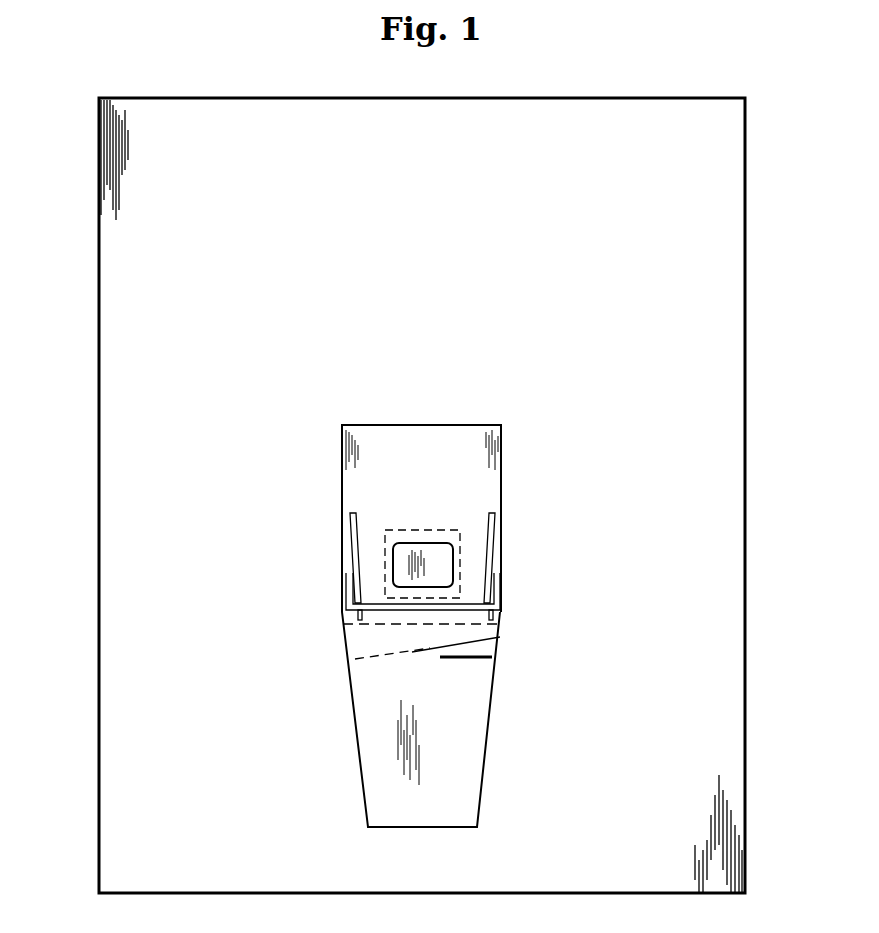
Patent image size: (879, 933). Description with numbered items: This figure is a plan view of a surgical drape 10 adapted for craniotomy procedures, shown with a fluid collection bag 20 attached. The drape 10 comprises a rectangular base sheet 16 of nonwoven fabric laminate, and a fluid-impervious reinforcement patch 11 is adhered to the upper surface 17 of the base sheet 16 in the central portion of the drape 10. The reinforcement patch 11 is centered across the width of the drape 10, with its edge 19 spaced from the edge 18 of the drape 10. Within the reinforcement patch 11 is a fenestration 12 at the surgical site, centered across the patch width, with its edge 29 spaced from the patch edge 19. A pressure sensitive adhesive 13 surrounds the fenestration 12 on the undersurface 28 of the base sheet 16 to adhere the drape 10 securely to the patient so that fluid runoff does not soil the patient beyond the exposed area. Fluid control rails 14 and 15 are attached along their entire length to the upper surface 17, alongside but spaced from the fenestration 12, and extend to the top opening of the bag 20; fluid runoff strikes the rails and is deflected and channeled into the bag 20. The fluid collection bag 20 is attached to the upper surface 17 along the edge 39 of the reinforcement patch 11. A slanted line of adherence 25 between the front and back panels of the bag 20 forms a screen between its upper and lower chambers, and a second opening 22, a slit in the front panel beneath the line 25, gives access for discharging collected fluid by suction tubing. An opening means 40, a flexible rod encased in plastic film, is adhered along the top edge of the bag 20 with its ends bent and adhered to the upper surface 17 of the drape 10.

The surgical drape 10 is at (691, 86).
The reinforcement patch 11 is at (488, 473).
The fenestration 12 is at (440, 557).
The pressure sensitive adhesive 13 is at (387, 530).
The fluid control rail 14 is at (352, 537).
The fluid control rail 15 is at (494, 538).
The base sheet 16 is at (713, 737).
The upper surface 17 is at (164, 455).
The edge of drape 18 is at (158, 98).
The edge of reinforcement patch 19 is at (375, 425).
The fluid collection bag 20 is at (500, 733).
The second opening 22 is at (473, 658).
The line of adherence 25 is at (380, 658).
The undersurface 28 is at (122, 365).
The edge of fenestration 29 is at (408, 543).
The edge of reinforcement patch 39 is at (385, 626).
The opening means 40 is at (470, 603).